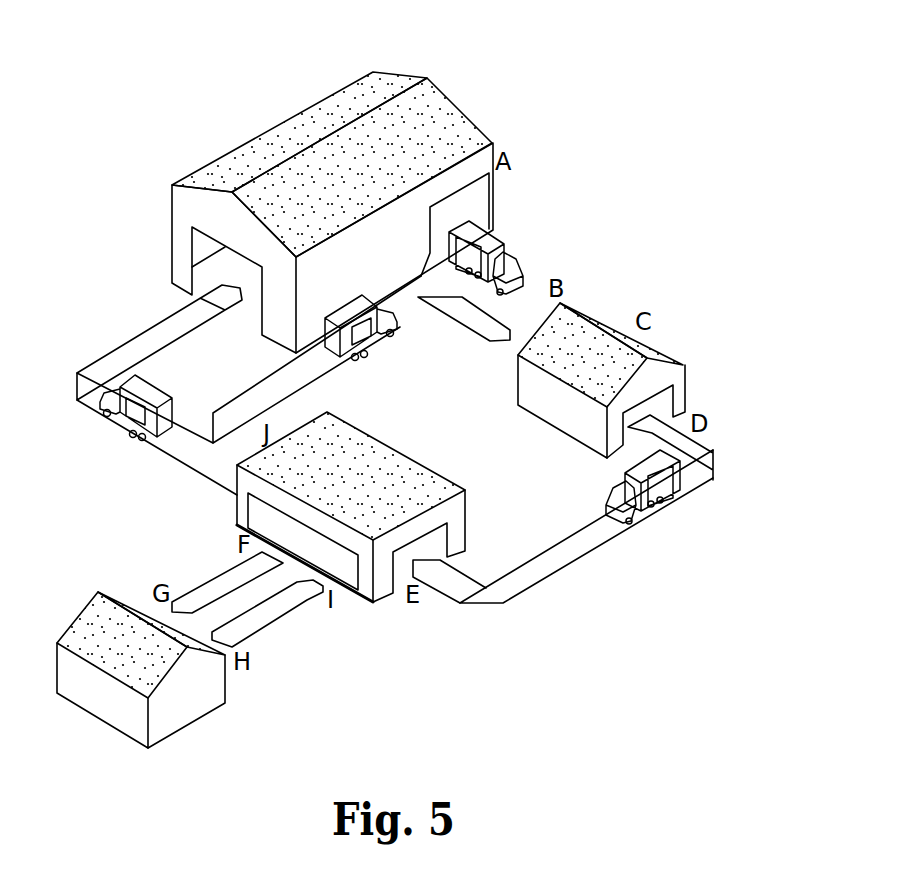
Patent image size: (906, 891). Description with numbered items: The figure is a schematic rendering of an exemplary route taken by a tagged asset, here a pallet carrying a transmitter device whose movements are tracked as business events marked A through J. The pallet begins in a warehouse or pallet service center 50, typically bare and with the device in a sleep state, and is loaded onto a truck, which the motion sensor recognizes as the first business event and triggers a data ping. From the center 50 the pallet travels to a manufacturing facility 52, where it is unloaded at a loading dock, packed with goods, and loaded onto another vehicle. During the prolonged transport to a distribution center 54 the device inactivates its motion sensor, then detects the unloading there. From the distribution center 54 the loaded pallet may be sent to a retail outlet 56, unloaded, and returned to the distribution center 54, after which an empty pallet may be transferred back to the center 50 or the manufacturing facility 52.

The warehouse or pallet service center 50 is at (288, 103).
The manufacturing facility 52 is at (698, 376).
The distribution center 54 is at (473, 510).
The retail outlet 56 is at (210, 723).